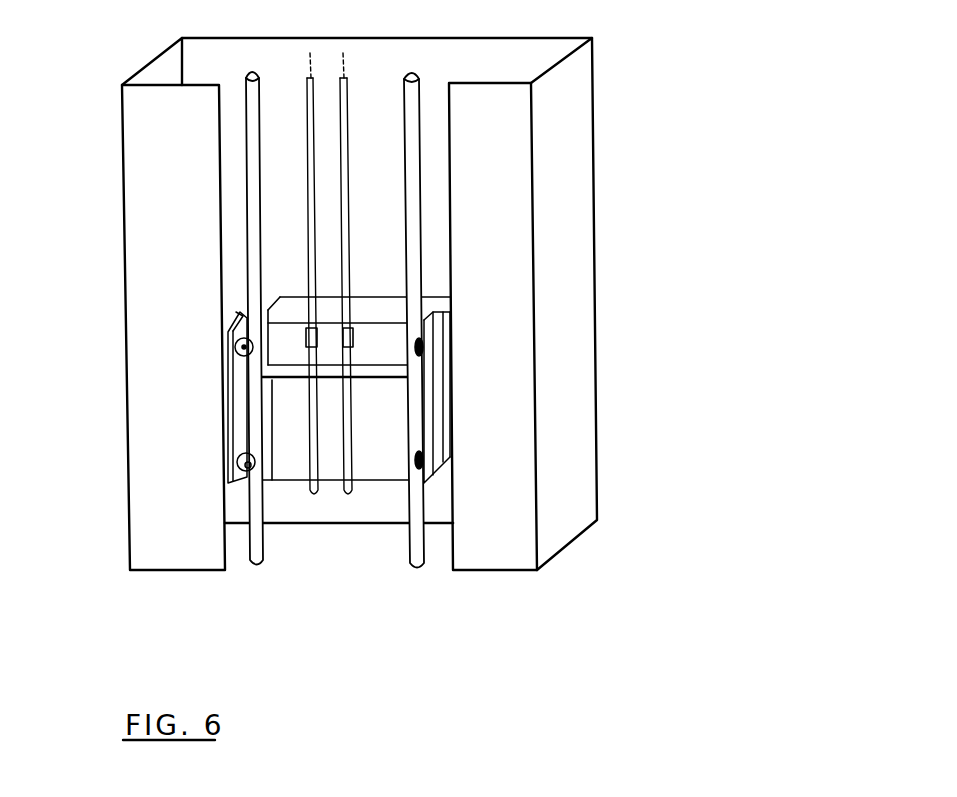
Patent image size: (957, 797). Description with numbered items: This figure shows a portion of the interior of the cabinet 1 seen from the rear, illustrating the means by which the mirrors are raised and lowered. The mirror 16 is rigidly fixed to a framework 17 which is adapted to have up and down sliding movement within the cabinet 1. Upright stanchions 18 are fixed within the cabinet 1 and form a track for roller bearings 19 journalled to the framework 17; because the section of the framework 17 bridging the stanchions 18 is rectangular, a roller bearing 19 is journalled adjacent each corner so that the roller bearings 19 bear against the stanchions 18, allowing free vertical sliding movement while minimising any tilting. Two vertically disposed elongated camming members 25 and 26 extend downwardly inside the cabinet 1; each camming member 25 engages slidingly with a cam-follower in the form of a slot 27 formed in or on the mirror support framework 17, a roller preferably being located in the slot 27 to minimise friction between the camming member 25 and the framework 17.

The cabinet 1 is at (88, 143).
The mirror 16 is at (367, 308).
The framework 17 is at (237, 398).
The upright stanchions 18 is at (420, 538).
The roller bearings 19 is at (423, 460).
The camming member 25 is at (310, 208).
The camming member 26 is at (347, 107).
The slot 27 is at (347, 342).